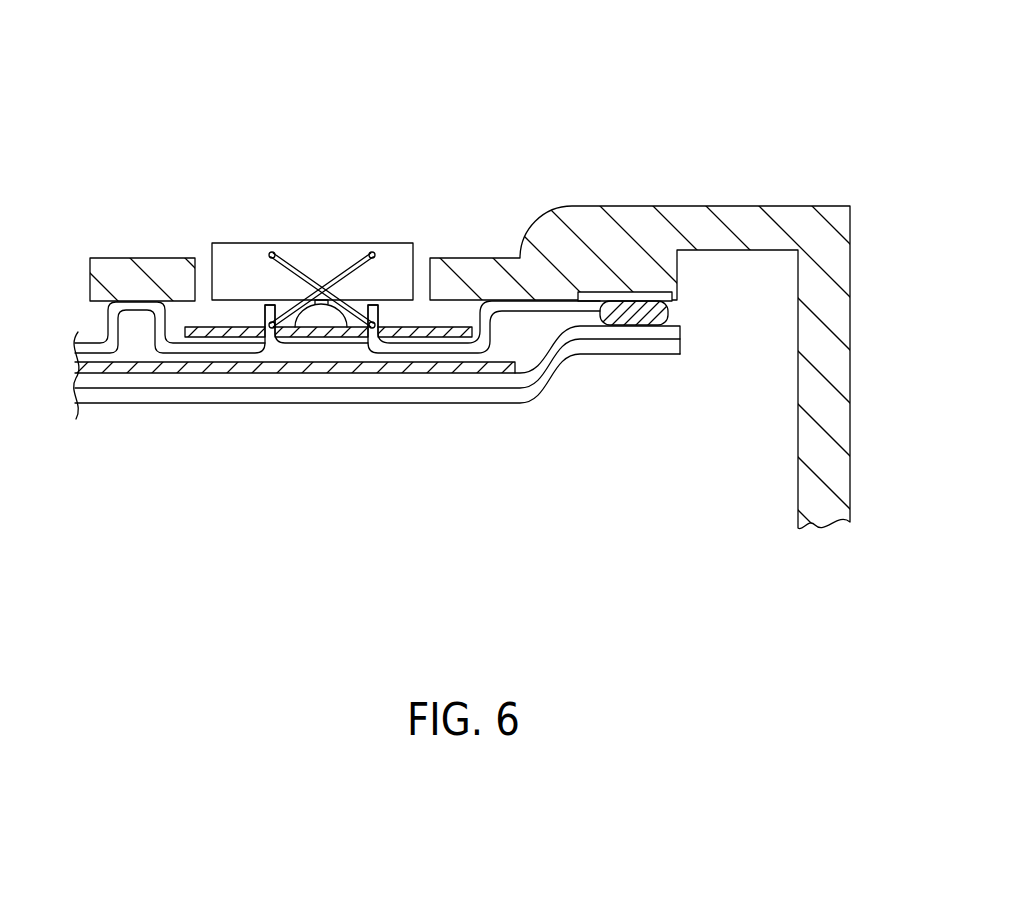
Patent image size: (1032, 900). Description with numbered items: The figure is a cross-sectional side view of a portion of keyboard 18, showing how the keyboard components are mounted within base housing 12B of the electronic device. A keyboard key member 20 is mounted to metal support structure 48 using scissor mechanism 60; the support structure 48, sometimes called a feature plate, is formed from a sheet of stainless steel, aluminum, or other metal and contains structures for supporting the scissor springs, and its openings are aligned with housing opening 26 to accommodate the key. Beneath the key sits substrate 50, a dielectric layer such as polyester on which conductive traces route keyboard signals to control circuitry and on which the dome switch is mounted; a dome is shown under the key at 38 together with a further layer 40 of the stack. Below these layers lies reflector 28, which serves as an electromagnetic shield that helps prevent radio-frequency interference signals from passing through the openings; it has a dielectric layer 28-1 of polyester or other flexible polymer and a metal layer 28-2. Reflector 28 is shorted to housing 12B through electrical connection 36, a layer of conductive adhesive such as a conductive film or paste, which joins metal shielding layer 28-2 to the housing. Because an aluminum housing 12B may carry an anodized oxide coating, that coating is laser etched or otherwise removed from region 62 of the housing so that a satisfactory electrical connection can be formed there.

The keyboard 18 is at (657, 58).
The keyboard key member 20 is at (340, 252).
The scissor mechanism 60 is at (288, 266).
The dome switch 38 is at (345, 306).
The housing opening 26 is at (440, 277).
The region of housing 62 is at (636, 293).
The electrical connection 36 is at (667, 312).
The base housing 12B is at (843, 320).
The metal support structure 48 is at (110, 333).
The substrate 50 is at (358, 342).
The reflector 28 is at (698, 317).
The dielectric layer 28-1 is at (165, 407).
The metal layer 28-2 is at (97, 384).
The circuit layer 40 is at (320, 367).